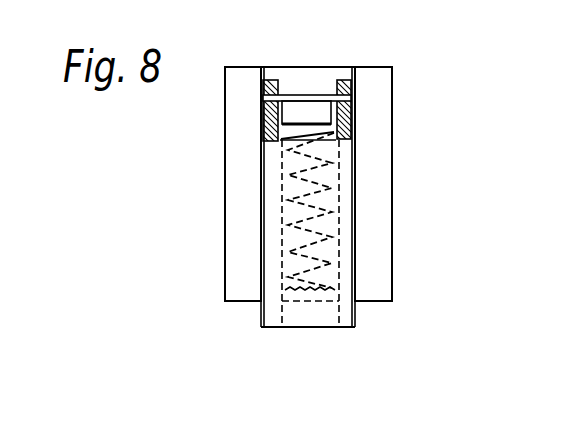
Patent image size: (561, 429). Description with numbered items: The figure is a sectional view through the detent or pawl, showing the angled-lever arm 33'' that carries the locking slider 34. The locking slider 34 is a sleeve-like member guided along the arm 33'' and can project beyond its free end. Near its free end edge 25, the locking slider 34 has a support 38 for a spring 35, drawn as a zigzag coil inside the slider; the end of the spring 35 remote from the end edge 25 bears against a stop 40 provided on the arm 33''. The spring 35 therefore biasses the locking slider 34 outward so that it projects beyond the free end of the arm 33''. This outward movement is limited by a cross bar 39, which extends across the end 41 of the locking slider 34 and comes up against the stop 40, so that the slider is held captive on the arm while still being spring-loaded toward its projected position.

The free end edge 25 is at (305, 327).
The angled-lever arm 33'' is at (347, 184).
The locking slider 34 is at (266, 151).
The spring 35 is at (292, 178).
The support 38 is at (333, 298).
The cross bar 39 is at (353, 98).
The stop 40 is at (355, 115).
The end of the locking slider 41 is at (290, 73).